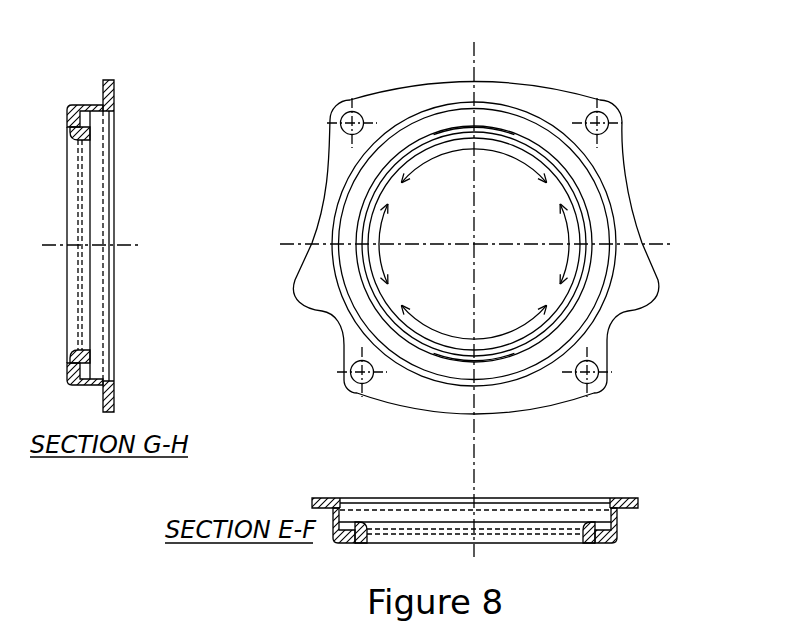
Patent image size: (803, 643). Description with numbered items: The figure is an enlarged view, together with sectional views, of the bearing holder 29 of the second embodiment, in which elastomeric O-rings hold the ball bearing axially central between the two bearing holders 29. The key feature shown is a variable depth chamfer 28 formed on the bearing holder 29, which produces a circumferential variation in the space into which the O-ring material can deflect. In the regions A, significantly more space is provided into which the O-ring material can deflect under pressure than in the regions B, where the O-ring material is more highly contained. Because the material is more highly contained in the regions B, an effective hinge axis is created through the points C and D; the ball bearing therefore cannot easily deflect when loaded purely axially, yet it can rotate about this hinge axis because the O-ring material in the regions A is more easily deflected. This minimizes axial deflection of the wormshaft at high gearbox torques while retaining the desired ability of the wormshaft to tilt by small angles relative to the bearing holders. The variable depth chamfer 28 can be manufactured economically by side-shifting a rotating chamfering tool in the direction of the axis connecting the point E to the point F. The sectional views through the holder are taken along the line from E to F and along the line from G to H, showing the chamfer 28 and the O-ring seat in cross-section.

The variable depth chamfer 28 is at (403, 157).
The bearing holder 29 is at (622, 95).
The regions A is at (474, 244).
The regions B is at (474, 244).
The hinge axis point C is at (479, 128).
The hinge axis point D is at (471, 366).
The axis end point E is at (361, 247).
The axis end point F is at (587, 247).
The section line point G is at (473, 140).
The section line point H is at (478, 400).